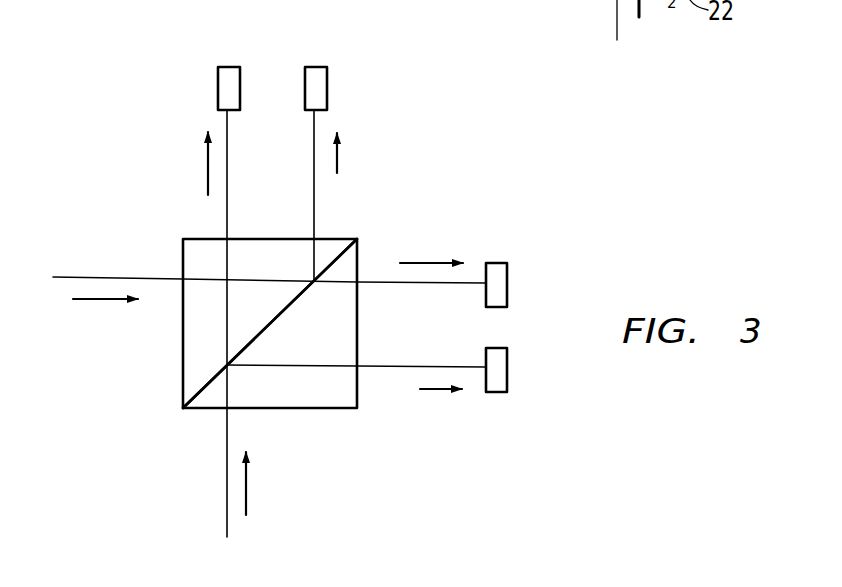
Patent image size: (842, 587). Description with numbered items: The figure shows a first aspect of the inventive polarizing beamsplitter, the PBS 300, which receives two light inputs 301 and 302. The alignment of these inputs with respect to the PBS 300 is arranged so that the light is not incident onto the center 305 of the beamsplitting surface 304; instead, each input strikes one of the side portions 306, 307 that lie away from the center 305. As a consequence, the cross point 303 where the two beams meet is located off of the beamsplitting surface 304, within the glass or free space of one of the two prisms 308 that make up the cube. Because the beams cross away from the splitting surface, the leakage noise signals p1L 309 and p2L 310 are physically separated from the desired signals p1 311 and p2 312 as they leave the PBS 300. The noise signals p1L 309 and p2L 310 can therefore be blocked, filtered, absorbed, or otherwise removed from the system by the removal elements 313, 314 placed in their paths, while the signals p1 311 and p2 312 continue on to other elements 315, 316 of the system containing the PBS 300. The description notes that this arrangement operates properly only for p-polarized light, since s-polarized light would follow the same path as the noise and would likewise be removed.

The polarizing beamsplitter 300 is at (106, 187).
The first light input 301 is at (103, 328).
The second light input 302 is at (287, 492).
The cross point 303 is at (225, 275).
The beamsplitting surface 304 is at (312, 409).
The center of the beamsplitting surface 305 is at (282, 312).
The first side portion 306 is at (229, 368).
The second side portion 307 is at (312, 279).
The prism 308 is at (336, 238).
The noise signal p1L 309 is at (367, 152).
The noise signal p2L 310 is at (441, 433).
The signal p1 311 is at (441, 232).
The signal p2 312 is at (178, 142).
The first removal element 313 is at (316, 65).
The second removal element 314 is at (507, 371).
The first other system element 315 is at (230, 65).
The second other system element 316 is at (507, 285).